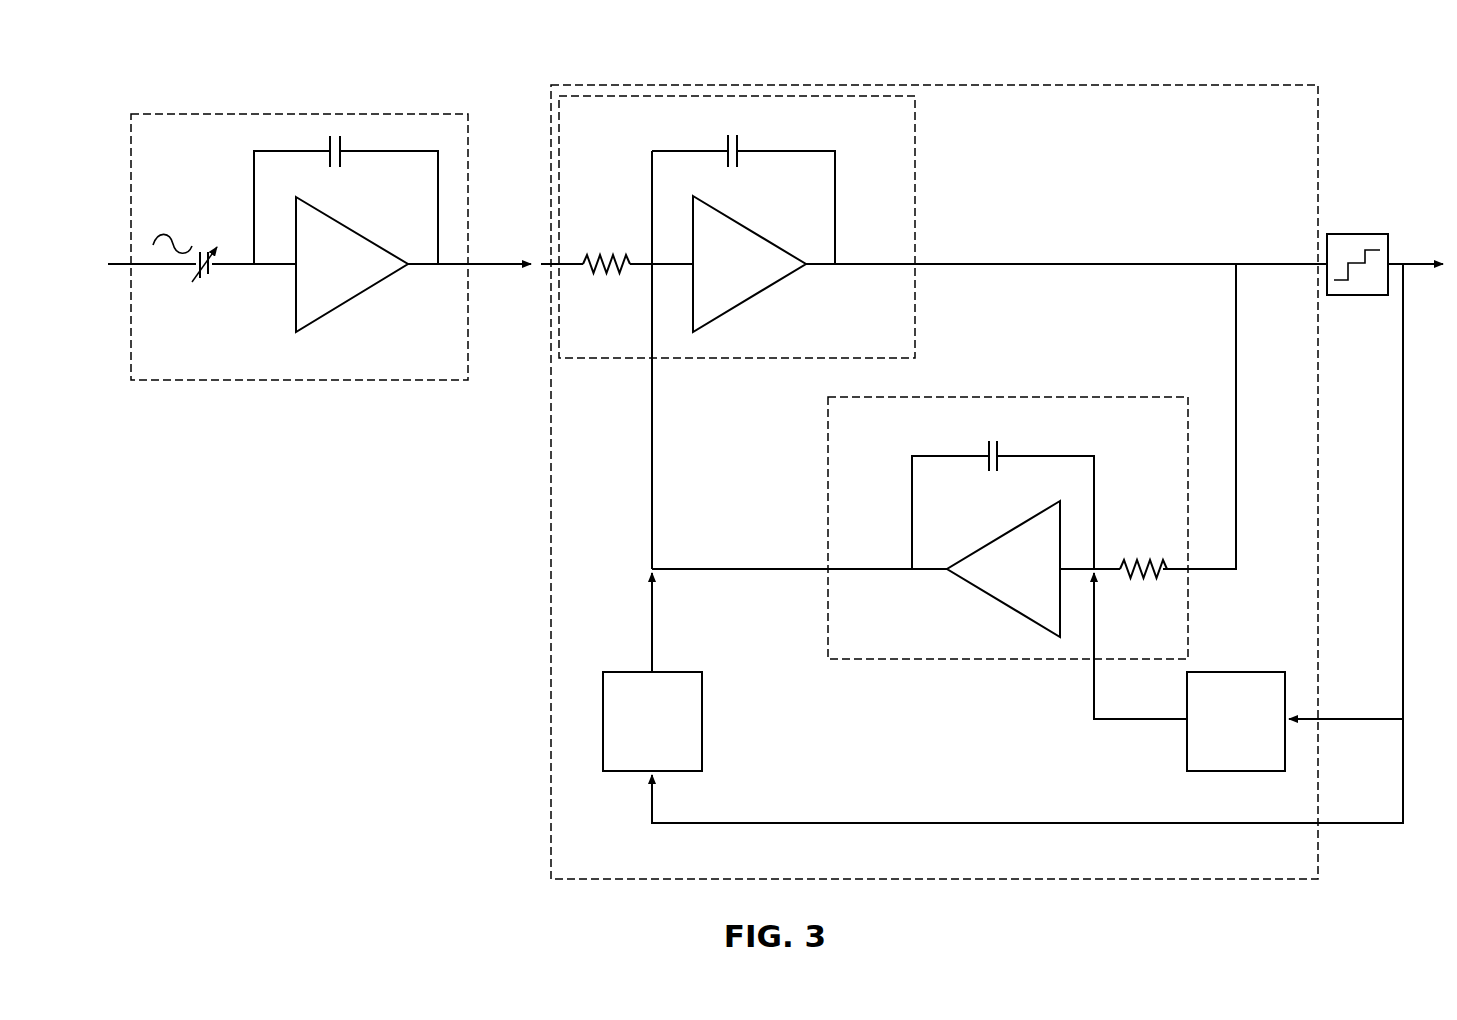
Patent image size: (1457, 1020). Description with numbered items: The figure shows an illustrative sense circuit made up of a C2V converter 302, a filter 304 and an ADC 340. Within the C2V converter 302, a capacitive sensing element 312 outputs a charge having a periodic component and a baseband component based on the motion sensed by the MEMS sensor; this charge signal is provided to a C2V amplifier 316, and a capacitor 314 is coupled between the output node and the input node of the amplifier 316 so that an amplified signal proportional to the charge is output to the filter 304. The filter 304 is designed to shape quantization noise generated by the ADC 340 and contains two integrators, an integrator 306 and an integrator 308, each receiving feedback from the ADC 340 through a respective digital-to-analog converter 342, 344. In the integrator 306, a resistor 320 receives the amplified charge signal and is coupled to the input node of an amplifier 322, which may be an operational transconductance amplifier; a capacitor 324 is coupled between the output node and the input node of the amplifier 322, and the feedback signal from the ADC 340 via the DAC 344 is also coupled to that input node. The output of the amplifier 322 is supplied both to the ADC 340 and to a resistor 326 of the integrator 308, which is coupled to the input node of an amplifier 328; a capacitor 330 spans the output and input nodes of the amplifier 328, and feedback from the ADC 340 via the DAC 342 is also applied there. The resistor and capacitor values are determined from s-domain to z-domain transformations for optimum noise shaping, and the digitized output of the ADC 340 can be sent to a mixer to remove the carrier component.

The C2V converter 302 is at (200, 113).
The filter 304 is at (625, 83).
The integrator 306 is at (653, 96).
The integrator 308 is at (1038, 396).
The capacitive sensing element 312 is at (206, 283).
The capacitor 314 is at (336, 133).
The C2V amplifier 316 is at (345, 305).
The resistor 320 is at (609, 250).
The amplifier 322 is at (748, 302).
The capacitor 324 is at (729, 134).
The resistor 326 is at (1135, 550).
The amplifier 328 is at (1003, 605).
The capacitor 330 is at (991, 438).
The ADC 340 is at (1355, 233).
The digital-to-analog converter 342 is at (1270, 672).
The digital-to-analog converter 344 is at (650, 670).